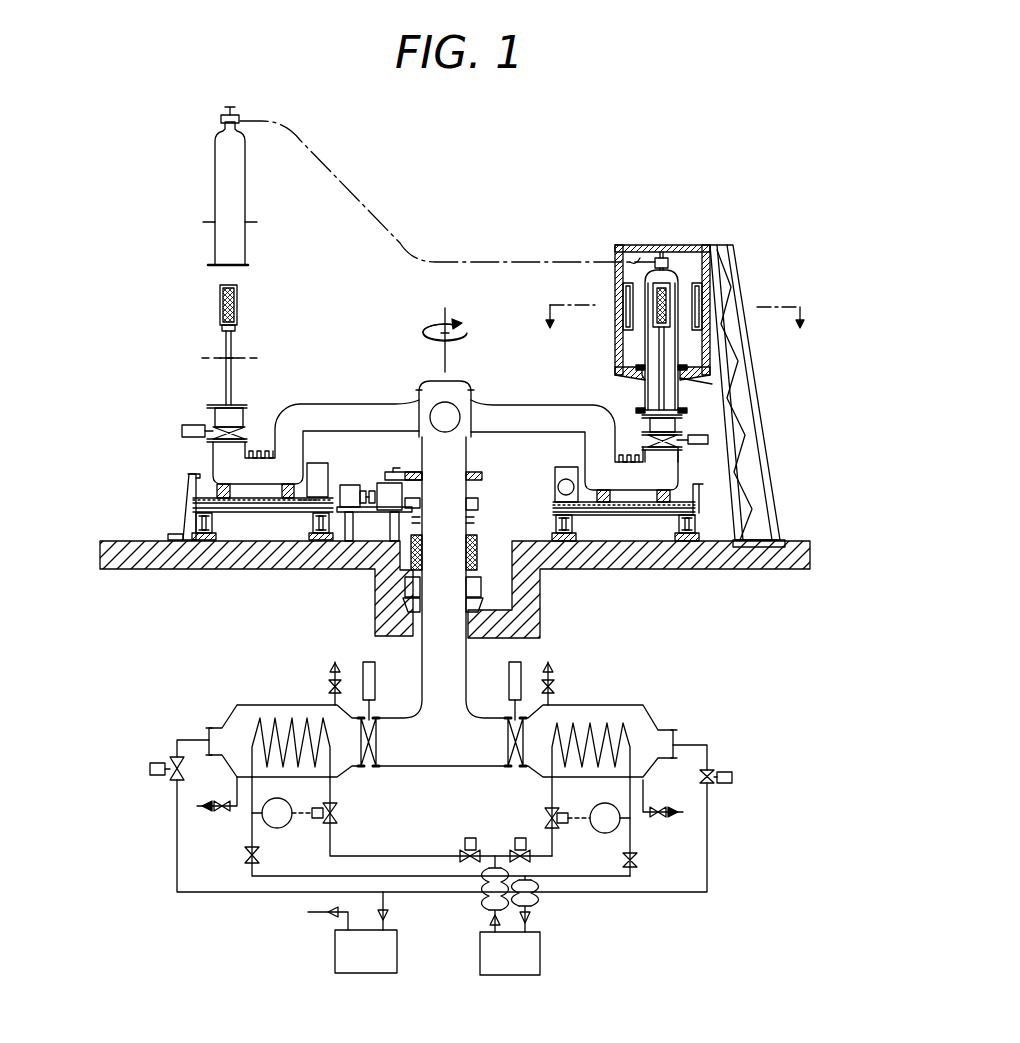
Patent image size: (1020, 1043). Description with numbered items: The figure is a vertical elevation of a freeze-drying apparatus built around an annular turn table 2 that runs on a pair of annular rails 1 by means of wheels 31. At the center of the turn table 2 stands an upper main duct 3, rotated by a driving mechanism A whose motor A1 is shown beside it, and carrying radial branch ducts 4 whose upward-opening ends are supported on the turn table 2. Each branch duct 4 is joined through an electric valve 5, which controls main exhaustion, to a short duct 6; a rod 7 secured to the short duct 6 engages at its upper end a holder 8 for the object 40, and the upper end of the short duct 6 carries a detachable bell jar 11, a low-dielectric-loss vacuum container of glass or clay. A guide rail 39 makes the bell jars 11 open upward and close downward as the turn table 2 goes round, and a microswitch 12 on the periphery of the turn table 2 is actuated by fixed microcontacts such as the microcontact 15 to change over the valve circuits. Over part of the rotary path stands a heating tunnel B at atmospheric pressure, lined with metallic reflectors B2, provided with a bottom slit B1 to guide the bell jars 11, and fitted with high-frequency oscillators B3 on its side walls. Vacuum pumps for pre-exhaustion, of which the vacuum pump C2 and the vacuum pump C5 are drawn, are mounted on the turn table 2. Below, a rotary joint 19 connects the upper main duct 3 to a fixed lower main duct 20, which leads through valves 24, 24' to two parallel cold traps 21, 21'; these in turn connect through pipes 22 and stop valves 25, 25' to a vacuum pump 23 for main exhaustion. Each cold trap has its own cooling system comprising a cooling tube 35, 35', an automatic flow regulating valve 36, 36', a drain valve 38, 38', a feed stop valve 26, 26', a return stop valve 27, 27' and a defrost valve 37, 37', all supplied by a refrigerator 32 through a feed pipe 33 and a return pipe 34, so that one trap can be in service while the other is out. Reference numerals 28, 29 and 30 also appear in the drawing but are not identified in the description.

The annular rails 1 is at (570, 536).
The turn table 2 is at (627, 514).
The upper main duct 3 is at (461, 390).
The branch ducts 4 is at (348, 404).
The electric valve 5 is at (182, 428).
The short duct 6 is at (215, 412).
The rod 7 is at (226, 378).
The holder 8 is at (222, 320).
The bell jar 11 is at (215, 194).
The microswitch 12 is at (190, 478).
The microcontact 15 is at (185, 506).
The rotary joint 19 is at (468, 525).
The lower main duct 20 is at (420, 660).
The cold trap 21 is at (280, 710).
The cold trap 21' is at (599, 710).
The pipes 22 is at (403, 896).
The vacuum pump 23 is at (335, 958).
The valve 24 is at (385, 744).
The valve 24' is at (498, 712).
The stop valve 25 is at (155, 754).
The stop valve 25' is at (730, 753).
The feed stop valve 26 is at (457, 829).
The feed stop valve 26' is at (508, 829).
The return stop valve 27 is at (364, 829).
The return stop valve 27' is at (700, 842).
The reference line 28 is at (258, 357).
The bracket 29 is at (257, 221).
The mark 30 is at (240, 356).
The wheels 31 is at (577, 541).
The refrigerator 32 is at (540, 957).
The feed pipe 33 is at (487, 910).
The return pipe 34 is at (533, 906).
The cooling tube 35 is at (291, 710).
The cooling tube 35' is at (596, 710).
The automatic flow regulating valve 36 is at (402, 816).
The automatic flow regulating valve 36' is at (587, 826).
The defrost valve 37 is at (317, 674).
The defrost valve 37' is at (571, 674).
The drain valve 38 is at (167, 809).
The drain valve 38' is at (710, 822).
The guide rail 39 is at (352, 192).
The object 40 is at (224, 285).
The driving mechanism A is at (385, 483).
The motor A1 is at (333, 490).
The heating tunnel B is at (668, 245).
The slit B1 is at (680, 388).
The metallic reflectors B2 is at (637, 257).
The high-frequency oscillators B3 is at (697, 280).
The vacuum pump C2 is at (313, 498).
The vacuum pump C5 is at (556, 478).